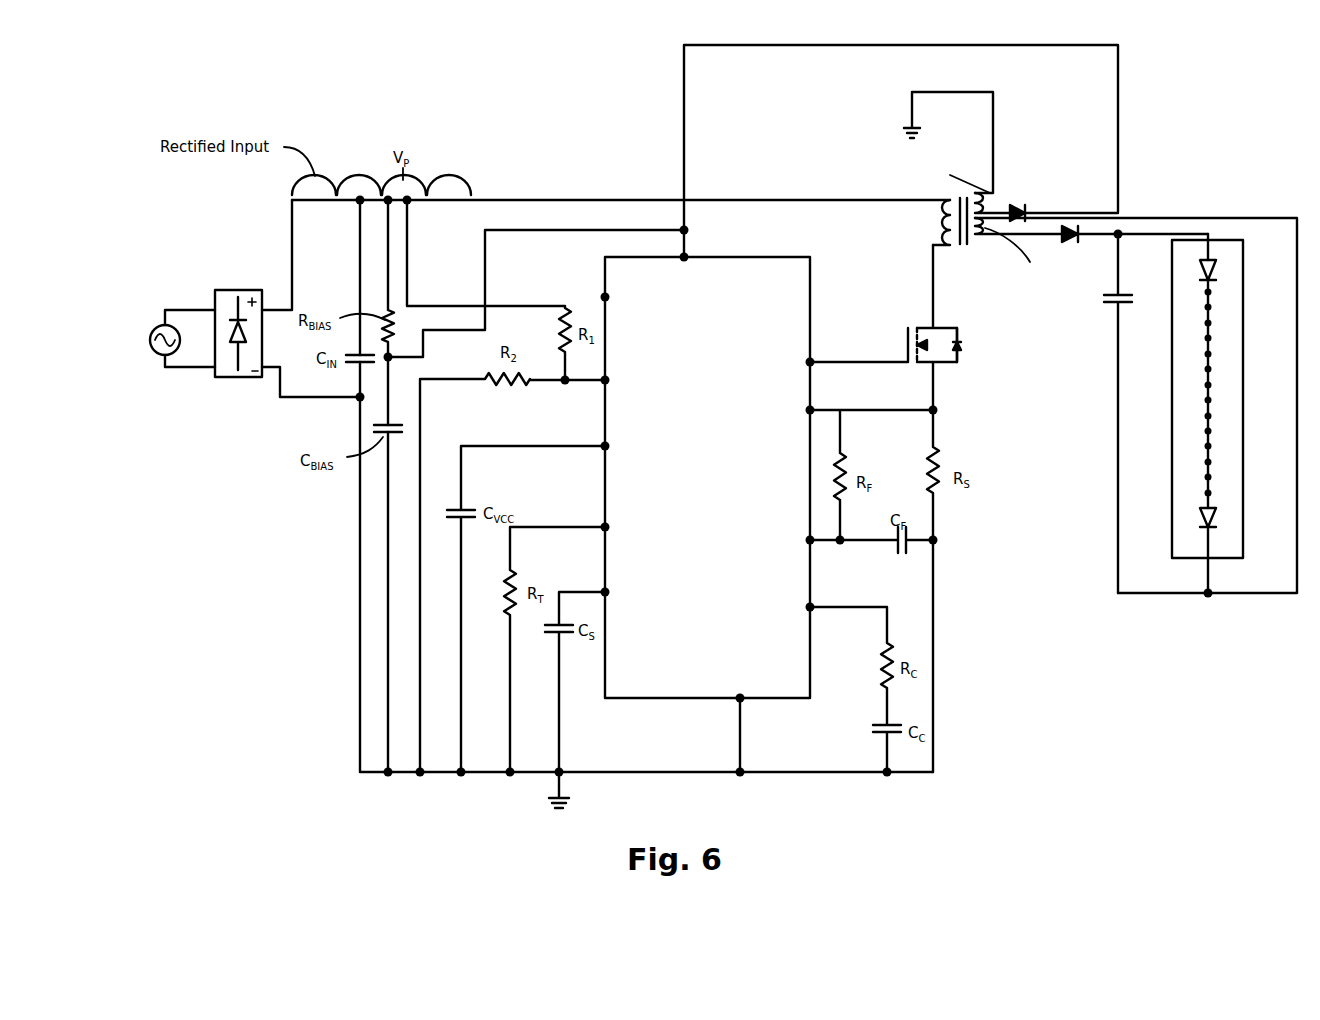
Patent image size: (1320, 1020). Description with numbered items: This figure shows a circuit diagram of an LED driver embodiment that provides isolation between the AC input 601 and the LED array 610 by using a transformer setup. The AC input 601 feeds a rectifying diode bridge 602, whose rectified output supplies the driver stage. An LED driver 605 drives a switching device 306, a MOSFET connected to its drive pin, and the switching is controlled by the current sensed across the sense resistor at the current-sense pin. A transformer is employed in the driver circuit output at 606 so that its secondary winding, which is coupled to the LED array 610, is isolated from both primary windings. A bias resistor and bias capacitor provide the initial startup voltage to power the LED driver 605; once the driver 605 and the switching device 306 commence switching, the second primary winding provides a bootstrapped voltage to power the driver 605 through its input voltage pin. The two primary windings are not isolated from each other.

The AC input 601 is at (156, 330).
The bridge 602 is at (212, 290).
The LED driver 605 is at (740, 257).
The switching device 306 is at (917, 330).
The driver circuit output 606 is at (978, 245).
The LED array 610 is at (1231, 392).